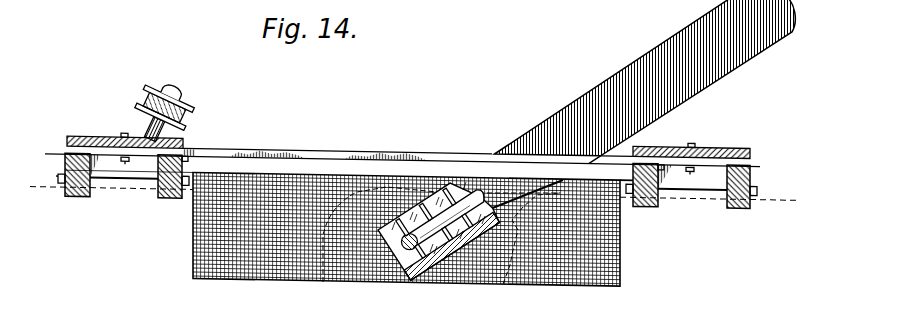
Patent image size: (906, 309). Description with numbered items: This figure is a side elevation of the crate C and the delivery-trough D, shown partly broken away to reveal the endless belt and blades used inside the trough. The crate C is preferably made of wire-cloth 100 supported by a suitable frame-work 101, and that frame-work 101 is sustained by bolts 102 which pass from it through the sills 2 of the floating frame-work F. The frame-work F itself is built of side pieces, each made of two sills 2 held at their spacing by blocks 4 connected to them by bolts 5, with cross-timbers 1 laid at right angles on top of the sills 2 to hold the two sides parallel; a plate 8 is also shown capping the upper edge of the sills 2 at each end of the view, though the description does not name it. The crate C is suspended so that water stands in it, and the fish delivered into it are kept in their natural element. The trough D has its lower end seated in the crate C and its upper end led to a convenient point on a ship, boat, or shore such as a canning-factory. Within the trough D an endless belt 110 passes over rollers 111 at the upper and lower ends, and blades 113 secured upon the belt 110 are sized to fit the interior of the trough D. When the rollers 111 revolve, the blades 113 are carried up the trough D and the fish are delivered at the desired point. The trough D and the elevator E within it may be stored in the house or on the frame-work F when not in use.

The cross-timbers 1 is at (434, 145).
The sills 2 is at (416, 189).
The blocks 4 is at (132, 175).
The bolts 5 is at (62, 179).
The cap plate 8 is at (108, 135).
The wire-cloth 100 is at (505, 279).
The frame-work 101 is at (325, 156).
The bolts 102 is at (197, 166).
The endless belt 110 is at (408, 249).
The rollers 111 is at (445, 219).
The blades 113 is at (451, 231).
The crate C is at (573, 277).
The trough D is at (645, 82).
The elevator E is at (443, 232).
The frame-work F is at (758, 158).